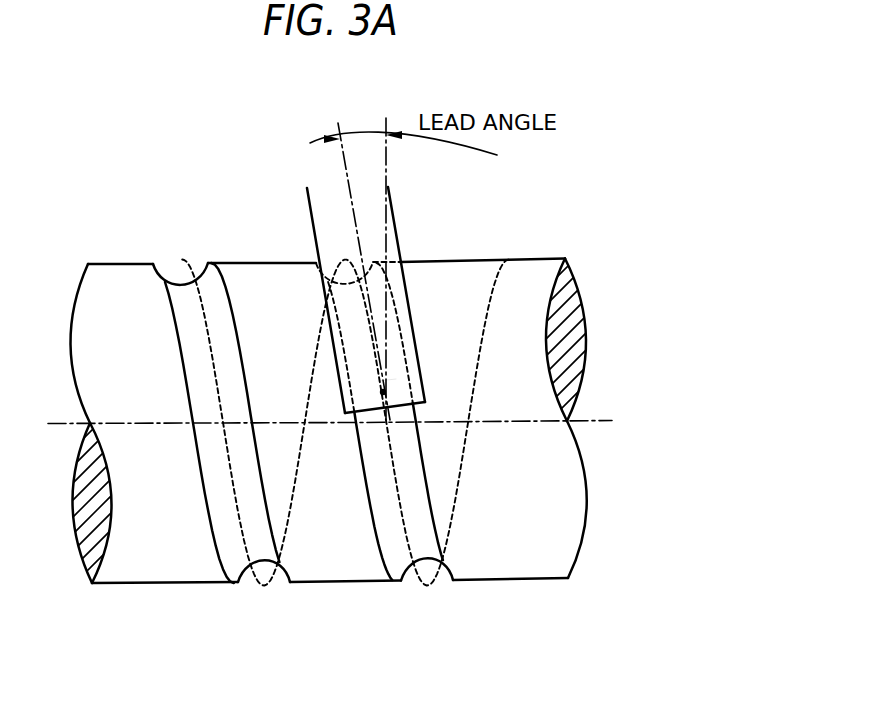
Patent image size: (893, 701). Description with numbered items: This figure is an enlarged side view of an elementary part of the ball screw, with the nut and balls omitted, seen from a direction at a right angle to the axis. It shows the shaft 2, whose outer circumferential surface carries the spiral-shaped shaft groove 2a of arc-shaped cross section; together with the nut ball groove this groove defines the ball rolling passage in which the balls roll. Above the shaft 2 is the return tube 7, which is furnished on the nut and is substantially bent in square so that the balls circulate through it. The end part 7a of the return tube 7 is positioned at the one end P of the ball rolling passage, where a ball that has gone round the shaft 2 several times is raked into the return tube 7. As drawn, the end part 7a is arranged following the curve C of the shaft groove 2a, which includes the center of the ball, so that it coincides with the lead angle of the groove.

The shaft 2 is at (122, 278).
The shaft groove 2a is at (243, 580).
The curve C is at (205, 327).
The return tube 7 is at (392, 208).
The end part of the return tube 7a is at (415, 382).
The one end of the ball rolling passage P is at (383, 392).